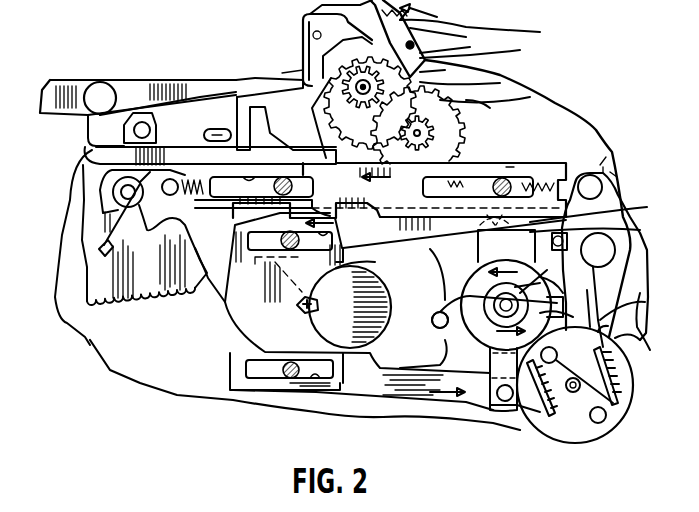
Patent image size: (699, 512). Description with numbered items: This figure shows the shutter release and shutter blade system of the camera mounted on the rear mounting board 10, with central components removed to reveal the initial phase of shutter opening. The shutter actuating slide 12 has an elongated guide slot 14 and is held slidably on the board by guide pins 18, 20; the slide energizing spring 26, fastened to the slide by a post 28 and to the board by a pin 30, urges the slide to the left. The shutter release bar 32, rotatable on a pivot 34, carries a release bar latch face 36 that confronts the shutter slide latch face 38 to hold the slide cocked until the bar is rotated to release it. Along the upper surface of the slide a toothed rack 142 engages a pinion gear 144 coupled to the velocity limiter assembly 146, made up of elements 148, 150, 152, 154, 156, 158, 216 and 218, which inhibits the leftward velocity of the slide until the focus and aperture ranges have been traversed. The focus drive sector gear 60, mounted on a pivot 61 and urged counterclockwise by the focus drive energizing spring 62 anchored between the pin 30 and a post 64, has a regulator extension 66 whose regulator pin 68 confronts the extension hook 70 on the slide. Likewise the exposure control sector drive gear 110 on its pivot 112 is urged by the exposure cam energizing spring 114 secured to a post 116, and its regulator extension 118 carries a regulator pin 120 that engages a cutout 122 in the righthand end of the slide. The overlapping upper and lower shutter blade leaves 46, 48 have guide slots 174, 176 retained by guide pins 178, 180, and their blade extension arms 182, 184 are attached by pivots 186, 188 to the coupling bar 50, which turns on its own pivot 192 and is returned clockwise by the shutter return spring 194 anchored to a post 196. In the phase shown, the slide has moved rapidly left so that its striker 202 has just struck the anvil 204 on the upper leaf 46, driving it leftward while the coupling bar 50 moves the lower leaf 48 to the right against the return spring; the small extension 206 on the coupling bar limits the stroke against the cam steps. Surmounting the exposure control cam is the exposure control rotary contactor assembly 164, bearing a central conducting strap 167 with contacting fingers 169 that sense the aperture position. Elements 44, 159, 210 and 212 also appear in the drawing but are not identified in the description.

The rear mounting board 10 is at (505, 85).
The shutter actuating slide 12 is at (483, 163).
The elongated guide slot 14 is at (549, 163).
The guide pin 18 is at (506, 167).
The guide pin 20 is at (276, 176).
The slide energizing spring 26 is at (209, 206).
The post 28 is at (589, 167).
The pin 30 is at (84, 148).
The shutter release bar 32 is at (135, 79).
The pivot 34 is at (80, 80).
The release bar latch face 36 is at (230, 92).
The shutter slide latch face 38 is at (318, 127).
The cam follower 44 is at (318, 302).
The upper shutter blade leaf 46 is at (200, 395).
The lower shutter blade leaf 48 is at (390, 282).
The coupling bar 50 is at (470, 272).
The focus drive sector gear 60 is at (205, 283).
The pivot 61 is at (83, 167).
The focus drive energizing spring 62 is at (83, 200).
The post 64 is at (93, 243).
The regulator extension 66 is at (160, 112).
The regulator pin 68 is at (145, 118).
The extension hook 70 is at (72, 146).
The exposure control sector drive gear 110 is at (645, 302).
The pivot 112 is at (640, 231).
The exposure cam energizing spring 114 is at (640, 267).
The post 116 is at (633, 208).
The regulator extension 118 is at (603, 167).
The regulator pin 120 is at (606, 157).
The cutout 122 is at (617, 177).
The toothed rack 142 is at (385, 140).
The pinion gear 144 is at (432, 116).
The velocity limiter assembly 146 is at (540, 32).
The velocity limiter element 148 is at (303, 47).
The velocity limiter element 150 is at (548, 86).
The velocity limiter element 152 is at (500, 83).
The velocity limiter element 154 is at (445, 70).
The velocity limiter element 156 is at (310, 13).
The velocity limiter element 158 is at (303, 29).
The slot 159 is at (282, 73).
The exposure control rotary contactor assembly 164 is at (639, 403).
The central conducting strap 167 is at (589, 435).
The contacting fingers 169 is at (572, 445).
The guide slot 174 is at (263, 176).
The guide slot 176 is at (323, 378).
The guide pin 178 is at (243, 310).
The guide pin 180 is at (266, 373).
The blade extension arm 182 is at (412, 262).
The blade extension arm 184 is at (423, 367).
The pivot 186 is at (626, 189).
The pivot 188 is at (500, 410).
The pivot 192 is at (515, 287).
The shutter return spring 194 is at (470, 300).
The post 196 is at (432, 333).
The striker 202 is at (340, 198).
The anvil 204 is at (308, 196).
The small extension 206 is at (534, 410).
The slot 210 is at (204, 134).
The bracket 212 is at (216, 96).
The velocity limiter element 216 is at (470, 47).
The velocity limiter element 218 is at (520, 50).